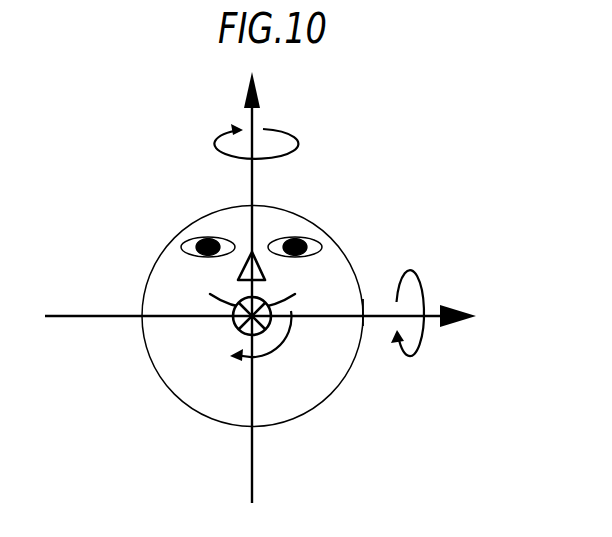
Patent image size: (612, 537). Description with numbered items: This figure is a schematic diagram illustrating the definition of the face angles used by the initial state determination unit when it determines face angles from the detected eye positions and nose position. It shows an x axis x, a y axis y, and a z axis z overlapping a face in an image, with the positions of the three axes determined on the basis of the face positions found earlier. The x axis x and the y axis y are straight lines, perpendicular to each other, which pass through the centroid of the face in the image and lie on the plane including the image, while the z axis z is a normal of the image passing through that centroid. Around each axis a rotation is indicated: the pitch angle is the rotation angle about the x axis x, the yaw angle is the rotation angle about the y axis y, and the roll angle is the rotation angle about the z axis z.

The x axis x is at (260, 323).
The y axis y is at (243, 287).
The z axis z is at (242, 320).